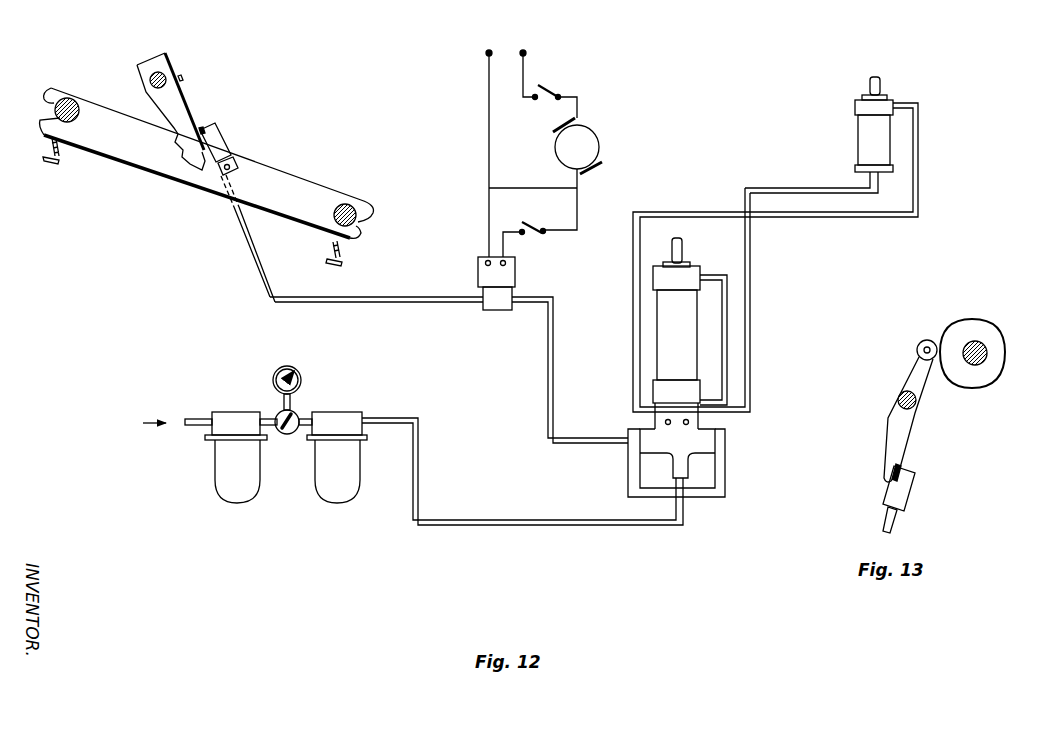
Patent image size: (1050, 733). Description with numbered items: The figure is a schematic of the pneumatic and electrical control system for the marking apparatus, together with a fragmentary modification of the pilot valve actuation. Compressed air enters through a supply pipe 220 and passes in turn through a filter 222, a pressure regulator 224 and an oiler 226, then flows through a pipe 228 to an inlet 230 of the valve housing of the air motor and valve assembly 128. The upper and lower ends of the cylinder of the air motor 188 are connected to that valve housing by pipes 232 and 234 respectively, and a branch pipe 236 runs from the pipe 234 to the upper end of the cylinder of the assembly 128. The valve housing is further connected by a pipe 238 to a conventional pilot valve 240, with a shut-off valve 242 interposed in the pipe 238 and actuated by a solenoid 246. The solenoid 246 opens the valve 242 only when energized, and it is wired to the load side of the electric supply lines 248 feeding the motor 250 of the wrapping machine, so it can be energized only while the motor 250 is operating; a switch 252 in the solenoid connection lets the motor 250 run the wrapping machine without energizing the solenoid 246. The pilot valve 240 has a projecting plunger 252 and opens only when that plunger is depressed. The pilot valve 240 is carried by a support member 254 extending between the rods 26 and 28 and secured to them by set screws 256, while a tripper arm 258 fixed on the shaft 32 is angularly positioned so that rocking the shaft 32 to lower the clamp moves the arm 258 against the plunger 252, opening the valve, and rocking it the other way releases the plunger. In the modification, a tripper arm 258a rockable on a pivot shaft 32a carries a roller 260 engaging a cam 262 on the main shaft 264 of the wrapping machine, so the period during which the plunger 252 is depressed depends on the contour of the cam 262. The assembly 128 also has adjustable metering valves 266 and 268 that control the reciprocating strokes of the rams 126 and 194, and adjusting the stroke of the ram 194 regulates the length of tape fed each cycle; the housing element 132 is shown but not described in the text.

In FIG. 12, the rod 26 is at (360, 224).
In FIG. 12, the rod 28 is at (53, 104).
In FIG. 12, the shaft 32 is at (164, 77).
In FIG. 13, the pivot shaft 32a is at (899, 400).
In FIG. 12, the ram 126 is at (683, 254).
In FIG. 12, the air motor and valve assembly 128 is at (665, 318).
In FIG. 12, the control valve 132 is at (724, 463).
In FIG. 12, the air motor 188 is at (864, 138).
In FIG. 12, the ram 194 is at (881, 87).
In FIG. 12, the supply pipe 220 is at (203, 418).
In FIG. 12, the filter 222 is at (224, 460).
In FIG. 12, the pressure regulator 224 is at (298, 412).
In FIG. 12, the oiler 226 is at (332, 460).
In FIG. 12, the pipe 228 is at (554, 520).
In FIG. 12, the inlet 230 is at (675, 468).
In FIG. 12, the pipe 232 is at (852, 213).
In FIG. 12, the pipe 234 is at (851, 188).
In FIG. 12, the branch pipe 236 is at (728, 331).
In FIG. 12, the pipe 238 is at (548, 352).
In FIG. 12, the pilot valve 240 is at (217, 141).
In FIG. 13, the pilot valve 240 is at (906, 490).
In FIG. 12, the shut-off valve 242 is at (491, 310).
In FIG. 12, the solenoid 246 is at (516, 276).
In FIG. 12, the electric supply lines 248 is at (523, 70).
In FIG. 12, the motor 250 is at (599, 135).
In FIG. 12, the switch / plunger 252 is at (199, 127).
In FIG. 13, the switch / plunger 252 is at (901, 470).
In FIG. 12, the support member 254 is at (152, 166).
In FIG. 12, the set screws 256 is at (50, 162).
In FIG. 12, the tripper arm 258 is at (181, 103).
In FIG. 13, the tripper arm 258a is at (896, 422).
In FIG. 13, the roller 260 is at (920, 343).
In FIG. 13, the cam 262 is at (976, 321).
In FIG. 13, the main shaft 264 is at (979, 348).
In FIG. 12, the metering valve 266 is at (664, 423).
In FIG. 12, the metering valve 268 is at (691, 423).